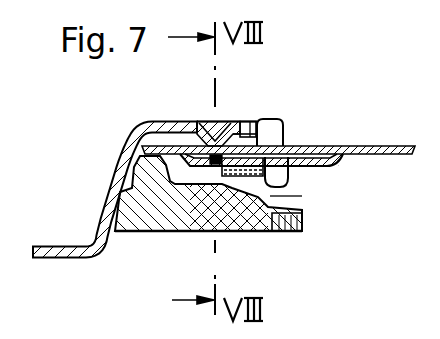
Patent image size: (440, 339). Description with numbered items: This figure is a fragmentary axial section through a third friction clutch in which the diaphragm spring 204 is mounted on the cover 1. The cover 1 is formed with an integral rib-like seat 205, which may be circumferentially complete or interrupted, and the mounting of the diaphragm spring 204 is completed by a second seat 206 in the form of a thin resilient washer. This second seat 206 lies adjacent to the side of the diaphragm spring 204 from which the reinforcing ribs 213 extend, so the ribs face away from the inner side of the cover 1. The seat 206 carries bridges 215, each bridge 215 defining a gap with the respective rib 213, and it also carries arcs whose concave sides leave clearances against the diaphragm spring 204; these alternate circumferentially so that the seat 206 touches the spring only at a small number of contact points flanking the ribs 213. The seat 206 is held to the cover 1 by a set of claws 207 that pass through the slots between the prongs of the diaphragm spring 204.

The cover 1 is at (138, 132).
The diaphragm spring 204 is at (378, 146).
The rib-like seat 205 is at (237, 122).
The second seat 206 is at (248, 178).
The claws 207 is at (268, 133).
The reinforcing ribs 213 is at (327, 167).
The bridges 215 is at (215, 167).